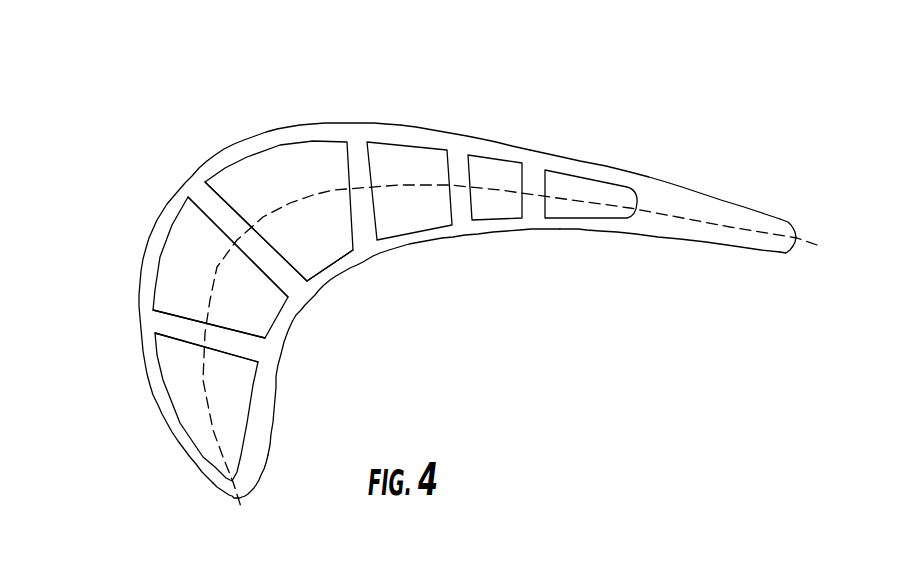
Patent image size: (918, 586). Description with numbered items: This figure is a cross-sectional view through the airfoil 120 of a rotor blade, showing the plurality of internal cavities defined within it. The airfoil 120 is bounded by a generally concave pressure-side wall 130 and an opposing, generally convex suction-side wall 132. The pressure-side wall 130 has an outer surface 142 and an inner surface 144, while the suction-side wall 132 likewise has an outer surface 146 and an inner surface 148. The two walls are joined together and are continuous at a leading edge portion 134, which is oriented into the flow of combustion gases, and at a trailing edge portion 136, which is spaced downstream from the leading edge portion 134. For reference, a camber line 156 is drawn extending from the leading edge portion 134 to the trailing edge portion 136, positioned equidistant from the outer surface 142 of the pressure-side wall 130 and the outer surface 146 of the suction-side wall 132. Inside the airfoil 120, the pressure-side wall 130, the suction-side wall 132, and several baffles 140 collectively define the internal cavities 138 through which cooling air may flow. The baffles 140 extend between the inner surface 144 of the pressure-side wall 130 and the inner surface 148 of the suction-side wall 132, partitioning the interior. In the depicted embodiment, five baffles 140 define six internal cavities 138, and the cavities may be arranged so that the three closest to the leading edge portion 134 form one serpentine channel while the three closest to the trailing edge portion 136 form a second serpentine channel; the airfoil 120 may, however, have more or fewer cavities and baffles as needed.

The airfoil 120 is at (451, 289).
The pressure-side wall 130 is at (337, 267).
The suction-side wall 132 is at (300, 126).
The leading edge portion 134 is at (233, 504).
The trailing edge portion 136 is at (800, 236).
The internal cavities 138 is at (273, 180).
The baffles 140 is at (370, 217).
The outer surface of the pressure-side wall 142 is at (683, 240).
The inner surface of the pressure-side wall 144 is at (319, 268).
The outer surface of the suction-side wall 146 is at (697, 192).
The inner surface of the suction-side wall 148 is at (178, 222).
The camber line 156 is at (327, 188).